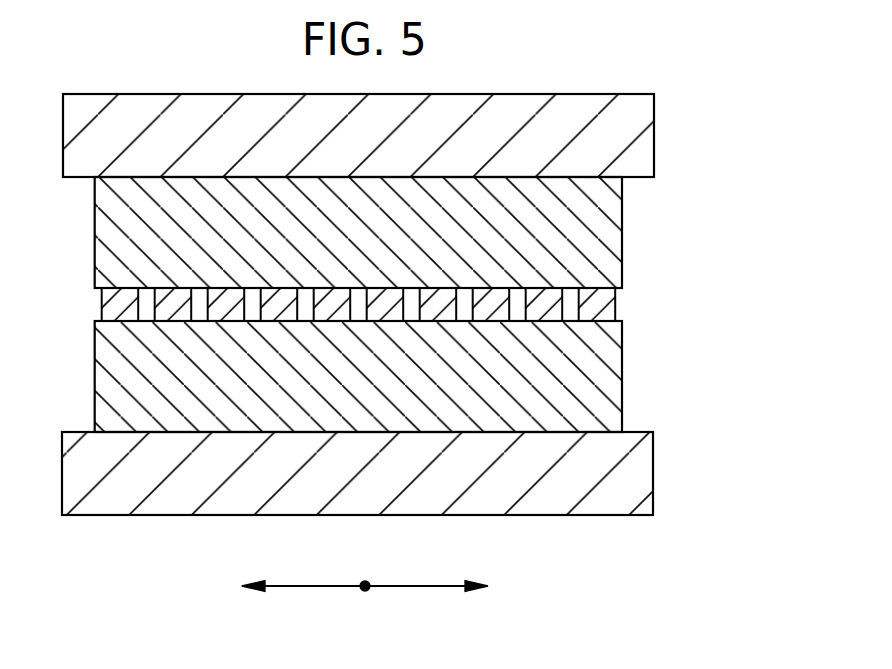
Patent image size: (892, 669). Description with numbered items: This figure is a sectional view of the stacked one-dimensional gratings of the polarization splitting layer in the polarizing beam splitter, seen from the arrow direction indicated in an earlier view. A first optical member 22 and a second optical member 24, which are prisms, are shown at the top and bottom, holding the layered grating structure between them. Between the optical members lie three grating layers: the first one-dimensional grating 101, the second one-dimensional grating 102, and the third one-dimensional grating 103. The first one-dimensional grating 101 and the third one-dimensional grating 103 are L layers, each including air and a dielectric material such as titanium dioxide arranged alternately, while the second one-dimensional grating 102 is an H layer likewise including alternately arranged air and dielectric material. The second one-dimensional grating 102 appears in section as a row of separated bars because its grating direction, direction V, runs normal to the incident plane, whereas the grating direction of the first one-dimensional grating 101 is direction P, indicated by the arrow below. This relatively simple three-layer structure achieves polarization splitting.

The first optical member 22 is at (648, 142).
The first one-dimensional grating 101 is at (613, 213).
The second one-dimensional grating 102 is at (611, 302).
The third one-dimensional grating 103 is at (613, 367).
The second optical member 24 is at (643, 463).
The direction V is at (365, 600).
The direction P is at (499, 589).